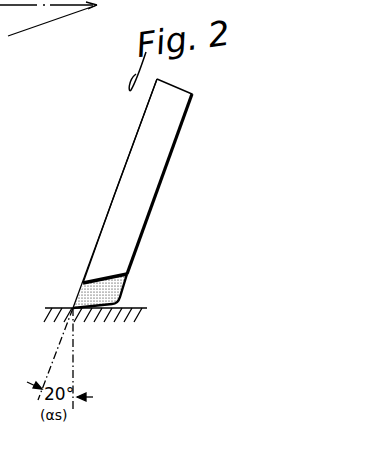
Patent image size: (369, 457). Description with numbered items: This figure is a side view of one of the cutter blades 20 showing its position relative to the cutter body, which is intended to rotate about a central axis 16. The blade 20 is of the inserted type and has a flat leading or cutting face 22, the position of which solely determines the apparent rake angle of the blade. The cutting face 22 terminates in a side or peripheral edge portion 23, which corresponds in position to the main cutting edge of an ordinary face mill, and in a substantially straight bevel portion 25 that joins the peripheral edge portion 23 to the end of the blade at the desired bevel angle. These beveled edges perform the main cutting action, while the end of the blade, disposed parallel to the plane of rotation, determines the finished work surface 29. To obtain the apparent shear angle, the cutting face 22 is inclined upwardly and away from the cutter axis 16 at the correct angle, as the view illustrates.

The cutter blade 20 is at (153, 198).
The cutting face 22 is at (125, 170).
The peripheral edge portion 23 is at (103, 223).
The bevel portion 25 is at (82, 290).
The finished work surface 29 is at (136, 309).
The central axis 16 is at (76, 352).